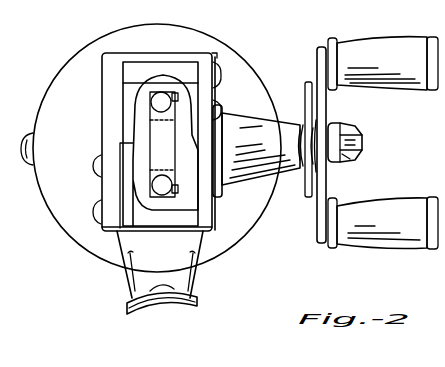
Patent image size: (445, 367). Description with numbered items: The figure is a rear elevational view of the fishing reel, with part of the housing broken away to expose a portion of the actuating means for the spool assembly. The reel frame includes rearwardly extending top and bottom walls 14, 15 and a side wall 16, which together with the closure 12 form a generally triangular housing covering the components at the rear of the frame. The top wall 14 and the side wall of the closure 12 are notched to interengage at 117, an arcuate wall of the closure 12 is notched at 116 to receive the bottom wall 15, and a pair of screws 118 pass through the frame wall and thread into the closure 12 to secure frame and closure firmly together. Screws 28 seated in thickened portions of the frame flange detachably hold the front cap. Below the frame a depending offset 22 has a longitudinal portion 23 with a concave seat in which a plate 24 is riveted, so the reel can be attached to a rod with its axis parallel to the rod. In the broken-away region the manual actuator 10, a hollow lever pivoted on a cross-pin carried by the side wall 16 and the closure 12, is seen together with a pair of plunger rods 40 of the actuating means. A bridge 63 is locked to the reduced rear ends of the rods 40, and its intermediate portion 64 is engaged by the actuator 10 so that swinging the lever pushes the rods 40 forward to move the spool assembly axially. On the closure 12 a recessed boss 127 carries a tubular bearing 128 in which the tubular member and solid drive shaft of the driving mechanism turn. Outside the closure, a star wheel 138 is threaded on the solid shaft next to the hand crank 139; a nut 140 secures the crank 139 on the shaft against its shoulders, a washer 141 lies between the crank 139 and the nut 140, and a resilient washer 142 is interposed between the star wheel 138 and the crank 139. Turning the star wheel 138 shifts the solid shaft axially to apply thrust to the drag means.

The manual actuator 10 is at (136, 68).
The closure 12 is at (219, 55).
The top wall 14 is at (154, 60).
The bottom wall 15 is at (165, 235).
The side wall 16 is at (105, 72).
The depending offset 22 is at (186, 276).
The longitudinal portion 23 is at (196, 305).
The plate 24 is at (170, 306).
The screws 28 is at (27, 140).
The plunger rods 40 is at (160, 101).
The bridge 63 is at (152, 136).
The intermediate portion 64 is at (152, 153).
The notch 116 is at (181, 213).
The interengagement notches 117 is at (213, 55).
The screws 118 is at (97, 166).
The recessed boss 127 is at (222, 192).
The tubular bearing 128 is at (261, 149).
The star wheel 138 is at (306, 84).
The hand crank 139 is at (318, 50).
The nut 140 is at (362, 138).
The washer 141 is at (329, 126).
The resilient washer 142 is at (320, 163).